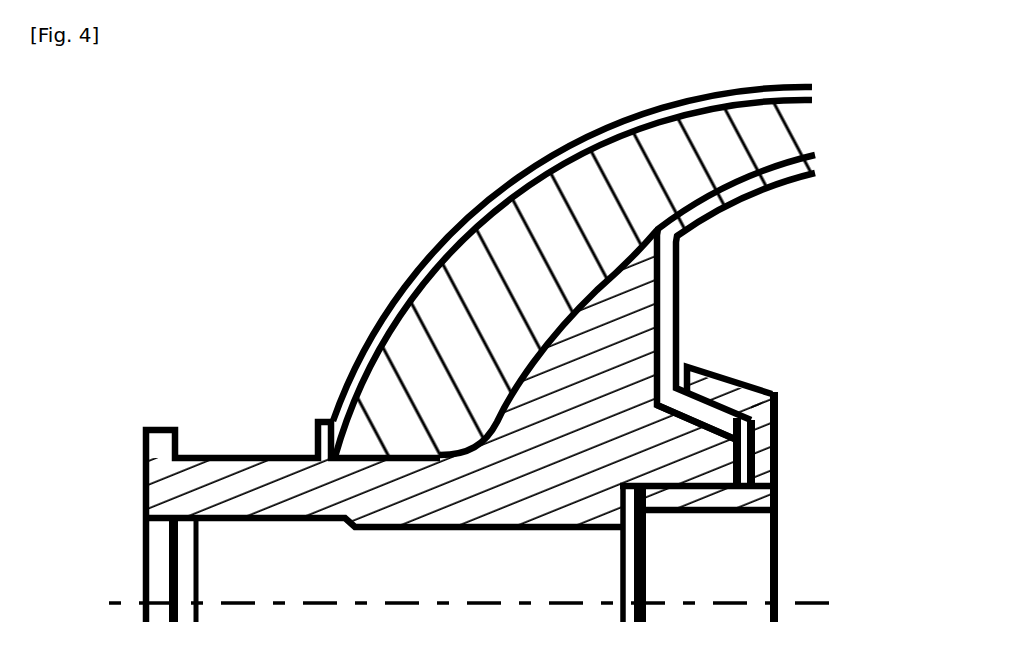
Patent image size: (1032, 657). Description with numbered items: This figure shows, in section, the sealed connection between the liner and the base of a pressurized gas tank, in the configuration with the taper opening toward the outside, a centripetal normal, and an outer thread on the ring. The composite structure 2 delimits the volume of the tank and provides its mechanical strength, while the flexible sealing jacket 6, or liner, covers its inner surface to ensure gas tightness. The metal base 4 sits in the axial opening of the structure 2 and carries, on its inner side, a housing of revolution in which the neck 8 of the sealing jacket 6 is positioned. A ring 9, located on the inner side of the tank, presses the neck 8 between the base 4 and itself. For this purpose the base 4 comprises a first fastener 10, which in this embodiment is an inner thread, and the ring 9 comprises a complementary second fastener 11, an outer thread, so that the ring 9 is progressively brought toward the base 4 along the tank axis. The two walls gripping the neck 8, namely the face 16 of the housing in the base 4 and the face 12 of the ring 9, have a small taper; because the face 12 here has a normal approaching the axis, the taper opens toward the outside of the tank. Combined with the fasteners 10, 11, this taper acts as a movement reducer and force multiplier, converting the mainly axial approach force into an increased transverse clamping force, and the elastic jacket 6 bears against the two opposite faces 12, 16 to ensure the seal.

The structure 2 is at (572, 272).
The base 4 is at (392, 426).
The sealing jacket 6 is at (756, 297).
The neck 8 is at (771, 451).
The ring 9 is at (755, 542).
The first fastener 10 is at (534, 565).
The second fastener 11 is at (594, 554).
The face of the ring 12 is at (806, 429).
The face of the housing 16 is at (597, 493).